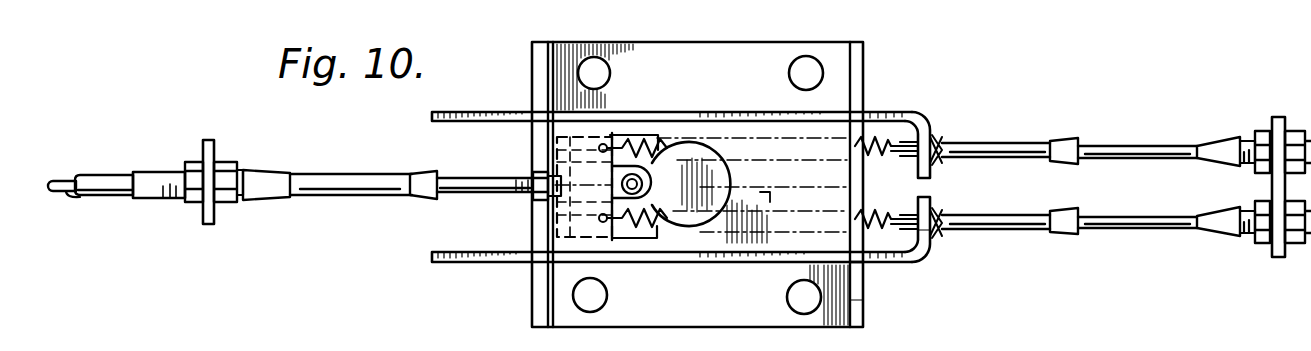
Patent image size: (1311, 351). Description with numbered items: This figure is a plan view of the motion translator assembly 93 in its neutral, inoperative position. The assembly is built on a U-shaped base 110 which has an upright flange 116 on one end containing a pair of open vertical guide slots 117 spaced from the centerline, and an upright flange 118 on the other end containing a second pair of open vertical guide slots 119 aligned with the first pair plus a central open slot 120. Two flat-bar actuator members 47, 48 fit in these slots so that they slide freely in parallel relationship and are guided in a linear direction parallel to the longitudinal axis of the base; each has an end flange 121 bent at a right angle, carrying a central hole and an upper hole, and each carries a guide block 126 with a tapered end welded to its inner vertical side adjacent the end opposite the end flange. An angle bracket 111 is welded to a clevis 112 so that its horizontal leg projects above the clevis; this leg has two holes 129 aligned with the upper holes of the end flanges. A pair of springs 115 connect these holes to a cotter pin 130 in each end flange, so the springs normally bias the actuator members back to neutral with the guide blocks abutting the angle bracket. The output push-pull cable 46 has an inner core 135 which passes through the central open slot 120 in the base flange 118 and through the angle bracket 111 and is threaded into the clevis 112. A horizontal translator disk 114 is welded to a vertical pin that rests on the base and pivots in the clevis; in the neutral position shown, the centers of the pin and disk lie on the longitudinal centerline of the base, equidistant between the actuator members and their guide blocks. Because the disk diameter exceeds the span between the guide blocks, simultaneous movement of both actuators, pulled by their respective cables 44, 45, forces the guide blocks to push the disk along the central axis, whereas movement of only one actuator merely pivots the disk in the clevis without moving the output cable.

The control unit assembly 93 is at (712, 31).
The U-shaped base 110 is at (750, 318).
The guide block 126 is at (578, 112).
The actuator member 48 is at (889, 113).
The second pair of open vertical guide slots 119 is at (519, 263).
The upright flange 118 is at (543, 295).
The actuator member 47 is at (896, 265).
The open vertical guide slots 117 is at (868, 266).
The upright flange 116 is at (863, 315).
The end flange 121 is at (932, 243).
The output push-pull cable 46 is at (347, 181).
The inner core 135 is at (500, 150).
The central open slot 120 is at (546, 200).
The angle bracket 111 is at (552, 223).
The clevis 112 is at (650, 190).
The horizontal translator disk 114 is at (730, 188).
The holes 129 is at (603, 143).
The springs 115 is at (868, 160).
The cotter pin 130 is at (942, 136).
The cable 45 is at (1148, 133).
The cable 44 is at (1108, 232).